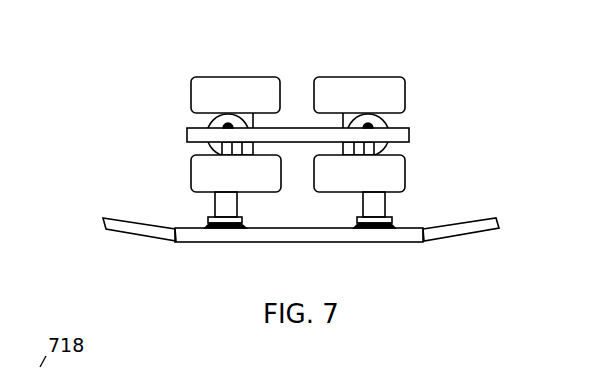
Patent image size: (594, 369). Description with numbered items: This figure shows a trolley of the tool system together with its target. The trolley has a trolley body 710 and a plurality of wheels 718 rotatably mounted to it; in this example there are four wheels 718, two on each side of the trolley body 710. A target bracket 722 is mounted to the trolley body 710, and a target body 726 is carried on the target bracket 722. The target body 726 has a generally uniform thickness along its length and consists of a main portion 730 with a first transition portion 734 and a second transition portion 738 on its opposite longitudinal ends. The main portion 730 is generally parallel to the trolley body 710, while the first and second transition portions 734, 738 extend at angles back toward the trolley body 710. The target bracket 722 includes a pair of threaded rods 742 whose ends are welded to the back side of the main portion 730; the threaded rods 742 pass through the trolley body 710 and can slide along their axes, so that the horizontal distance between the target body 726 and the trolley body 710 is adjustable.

The trolley body 710 is at (298, 128).
The wheels 718 is at (222, 83).
The target bracket 722 is at (405, 203).
The target body 726 is at (319, 245).
The main portion 730 is at (333, 242).
The first transition portion 734 is at (137, 233).
The second transition portion 738 is at (455, 240).
The threaded rods 742 is at (368, 205).